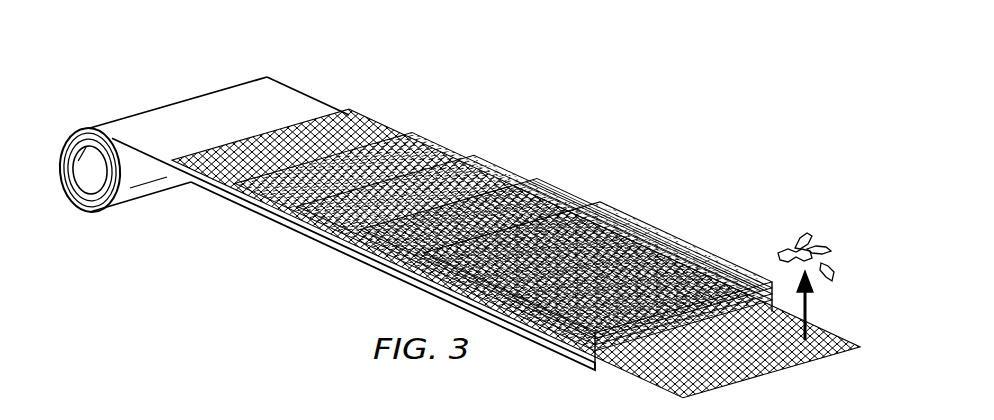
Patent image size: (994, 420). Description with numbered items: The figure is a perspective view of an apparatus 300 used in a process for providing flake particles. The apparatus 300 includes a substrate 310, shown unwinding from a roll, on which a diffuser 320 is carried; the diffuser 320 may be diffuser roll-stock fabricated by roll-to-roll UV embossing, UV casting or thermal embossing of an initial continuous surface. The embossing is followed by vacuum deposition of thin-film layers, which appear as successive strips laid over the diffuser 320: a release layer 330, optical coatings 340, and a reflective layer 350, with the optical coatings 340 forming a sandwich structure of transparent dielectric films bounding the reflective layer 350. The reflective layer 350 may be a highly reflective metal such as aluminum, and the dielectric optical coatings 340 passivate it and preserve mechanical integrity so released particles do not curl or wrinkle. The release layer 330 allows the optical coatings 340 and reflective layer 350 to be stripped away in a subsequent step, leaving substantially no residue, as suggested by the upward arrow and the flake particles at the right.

The apparatus 300 is at (539, 75).
The substrate 310 is at (297, 99).
The diffuser 320 is at (363, 122).
The release layer 330 is at (428, 148).
The optical coatings 340 is at (500, 172).
The reflective layer 350 is at (560, 193).